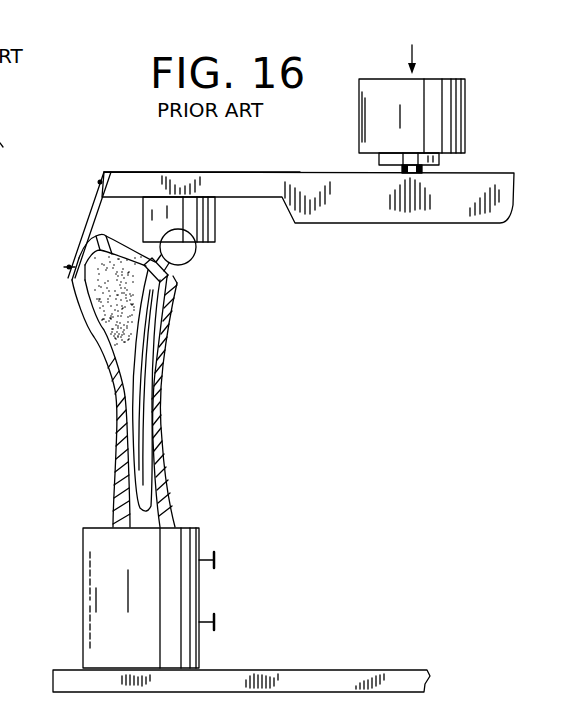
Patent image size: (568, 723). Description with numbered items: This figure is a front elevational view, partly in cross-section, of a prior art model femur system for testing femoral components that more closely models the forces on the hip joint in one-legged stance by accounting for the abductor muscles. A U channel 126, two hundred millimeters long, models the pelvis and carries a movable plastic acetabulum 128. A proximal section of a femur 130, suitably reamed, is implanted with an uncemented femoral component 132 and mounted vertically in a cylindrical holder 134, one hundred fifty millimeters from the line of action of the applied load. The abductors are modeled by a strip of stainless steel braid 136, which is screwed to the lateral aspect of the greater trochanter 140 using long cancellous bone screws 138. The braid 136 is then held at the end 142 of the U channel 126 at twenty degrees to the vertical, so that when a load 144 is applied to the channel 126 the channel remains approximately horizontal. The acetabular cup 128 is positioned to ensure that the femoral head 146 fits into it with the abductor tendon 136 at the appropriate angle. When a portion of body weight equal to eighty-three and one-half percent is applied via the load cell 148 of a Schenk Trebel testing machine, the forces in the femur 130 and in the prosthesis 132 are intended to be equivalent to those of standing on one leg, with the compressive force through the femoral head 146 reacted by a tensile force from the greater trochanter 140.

The U channel 126 is at (302, 173).
The acetabulum 128 is at (215, 230).
The femur 130 is at (167, 435).
The femoral component 132 is at (150, 325).
The cylindrical holder 134 is at (90, 578).
The stainless steel braid 136 is at (88, 222).
The cancellous bone screws 138 is at (67, 268).
The greater trochanter 140 is at (78, 305).
The end of the U channel 142 is at (139, 183).
The load 144 is at (415, 57).
The femoral head 146 is at (195, 256).
The load cell 148 is at (466, 135).